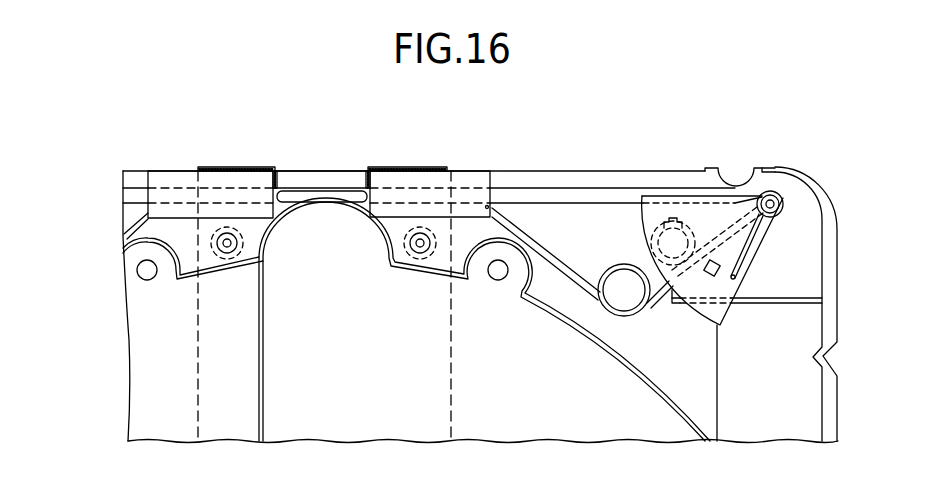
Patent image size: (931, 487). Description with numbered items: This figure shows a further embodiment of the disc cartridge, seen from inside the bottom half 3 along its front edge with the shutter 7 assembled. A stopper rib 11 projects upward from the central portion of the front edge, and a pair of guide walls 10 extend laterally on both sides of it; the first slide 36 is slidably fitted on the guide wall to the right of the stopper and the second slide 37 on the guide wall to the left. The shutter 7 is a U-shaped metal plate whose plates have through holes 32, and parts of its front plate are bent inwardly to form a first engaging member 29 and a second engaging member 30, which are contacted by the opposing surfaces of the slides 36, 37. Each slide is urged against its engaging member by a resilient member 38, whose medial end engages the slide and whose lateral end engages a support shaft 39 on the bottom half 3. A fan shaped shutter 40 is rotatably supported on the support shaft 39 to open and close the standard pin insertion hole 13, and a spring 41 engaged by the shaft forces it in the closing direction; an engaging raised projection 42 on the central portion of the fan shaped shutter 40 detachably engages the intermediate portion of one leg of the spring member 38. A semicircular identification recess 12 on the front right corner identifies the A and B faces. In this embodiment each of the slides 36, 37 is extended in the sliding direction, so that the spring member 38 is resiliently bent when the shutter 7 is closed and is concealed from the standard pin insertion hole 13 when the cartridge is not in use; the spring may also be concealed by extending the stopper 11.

The bottom half 3 is at (552, 171).
The shutter 7 is at (401, 164).
The guide walls 10 is at (592, 188).
The stopper rib 11 is at (324, 191).
The identification recess 12 is at (733, 184).
The standard pin insertion hole 13 is at (666, 221).
The first engaging member 29 is at (366, 169).
The second engaging member 30 is at (286, 171).
The through holes 32 is at (234, 233).
The first slide 36 is at (470, 171).
The second slide 37 is at (169, 171).
The resilient member 38 is at (522, 229).
The support shaft 39 is at (778, 194).
The fan shaped shutter 40 is at (675, 205).
The spring 41 is at (755, 194).
The engaging raised projection 42 is at (708, 252).